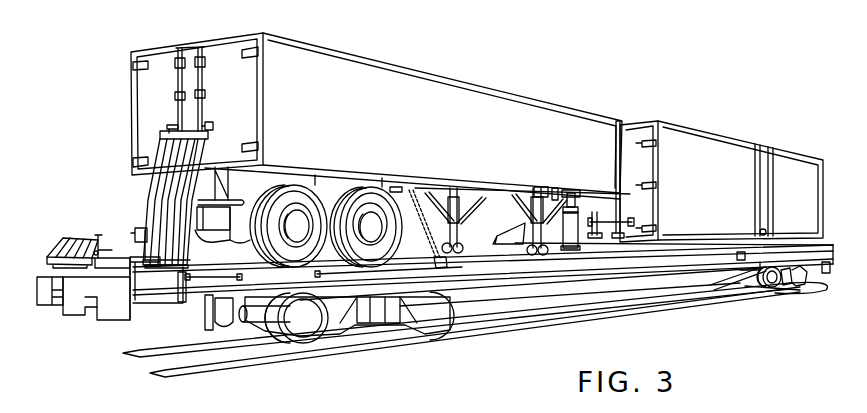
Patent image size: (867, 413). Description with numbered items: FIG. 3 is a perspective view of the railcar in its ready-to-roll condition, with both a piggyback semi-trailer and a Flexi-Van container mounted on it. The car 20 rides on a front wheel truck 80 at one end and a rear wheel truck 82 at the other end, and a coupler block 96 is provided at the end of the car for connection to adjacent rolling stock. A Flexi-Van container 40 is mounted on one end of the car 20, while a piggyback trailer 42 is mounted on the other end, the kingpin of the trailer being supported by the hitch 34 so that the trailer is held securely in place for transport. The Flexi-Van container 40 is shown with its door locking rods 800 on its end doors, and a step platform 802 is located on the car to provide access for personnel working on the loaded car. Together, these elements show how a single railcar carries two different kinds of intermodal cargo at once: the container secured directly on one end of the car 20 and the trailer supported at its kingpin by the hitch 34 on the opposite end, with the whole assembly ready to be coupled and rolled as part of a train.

The car 20 is at (344, 366).
The hitch 34 is at (588, 208).
The Flexi-Van container 40 is at (730, 186).
The piggyback trailer 42 is at (500, 140).
The front wheel truck 80 is at (257, 337).
The rear wheel truck 82 is at (765, 293).
The coupler block 96 is at (96, 300).
The door locking rods 800 is at (197, 152).
The step platform 802 is at (76, 237).